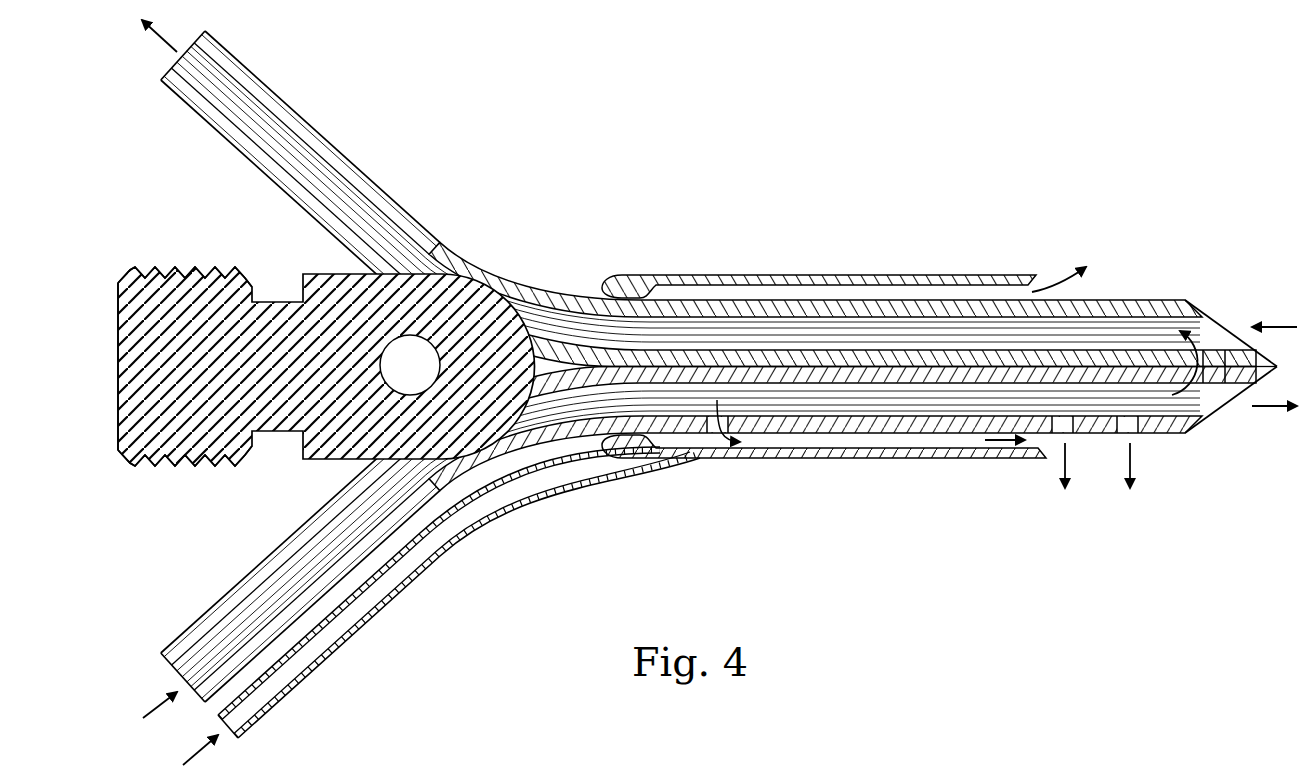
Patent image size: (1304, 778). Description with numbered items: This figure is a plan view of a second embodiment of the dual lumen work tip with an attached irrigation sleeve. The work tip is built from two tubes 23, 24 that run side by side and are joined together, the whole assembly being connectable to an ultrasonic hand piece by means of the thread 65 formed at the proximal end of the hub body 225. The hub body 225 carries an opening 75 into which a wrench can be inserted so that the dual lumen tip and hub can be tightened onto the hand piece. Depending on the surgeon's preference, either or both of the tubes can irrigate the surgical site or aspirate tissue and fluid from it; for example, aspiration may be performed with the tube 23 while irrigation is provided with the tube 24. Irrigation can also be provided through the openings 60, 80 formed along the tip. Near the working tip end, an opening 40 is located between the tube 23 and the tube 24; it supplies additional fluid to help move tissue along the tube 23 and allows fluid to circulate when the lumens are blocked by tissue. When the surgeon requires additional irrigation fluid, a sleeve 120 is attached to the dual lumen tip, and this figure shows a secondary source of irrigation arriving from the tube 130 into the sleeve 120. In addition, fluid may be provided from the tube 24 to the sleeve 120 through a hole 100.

The thread 65 is at (170, 268).
The hub body 225 is at (327, 273).
The opening 75 is at (422, 361).
The tube 23 is at (918, 300).
The sleeve 120 is at (833, 276).
The opening 40 is at (1218, 362).
The hole 100 is at (715, 428).
The tube 24 is at (880, 444).
The opening 60 is at (1065, 425).
The opening 80 is at (1130, 425).
The tube 130 is at (332, 655).